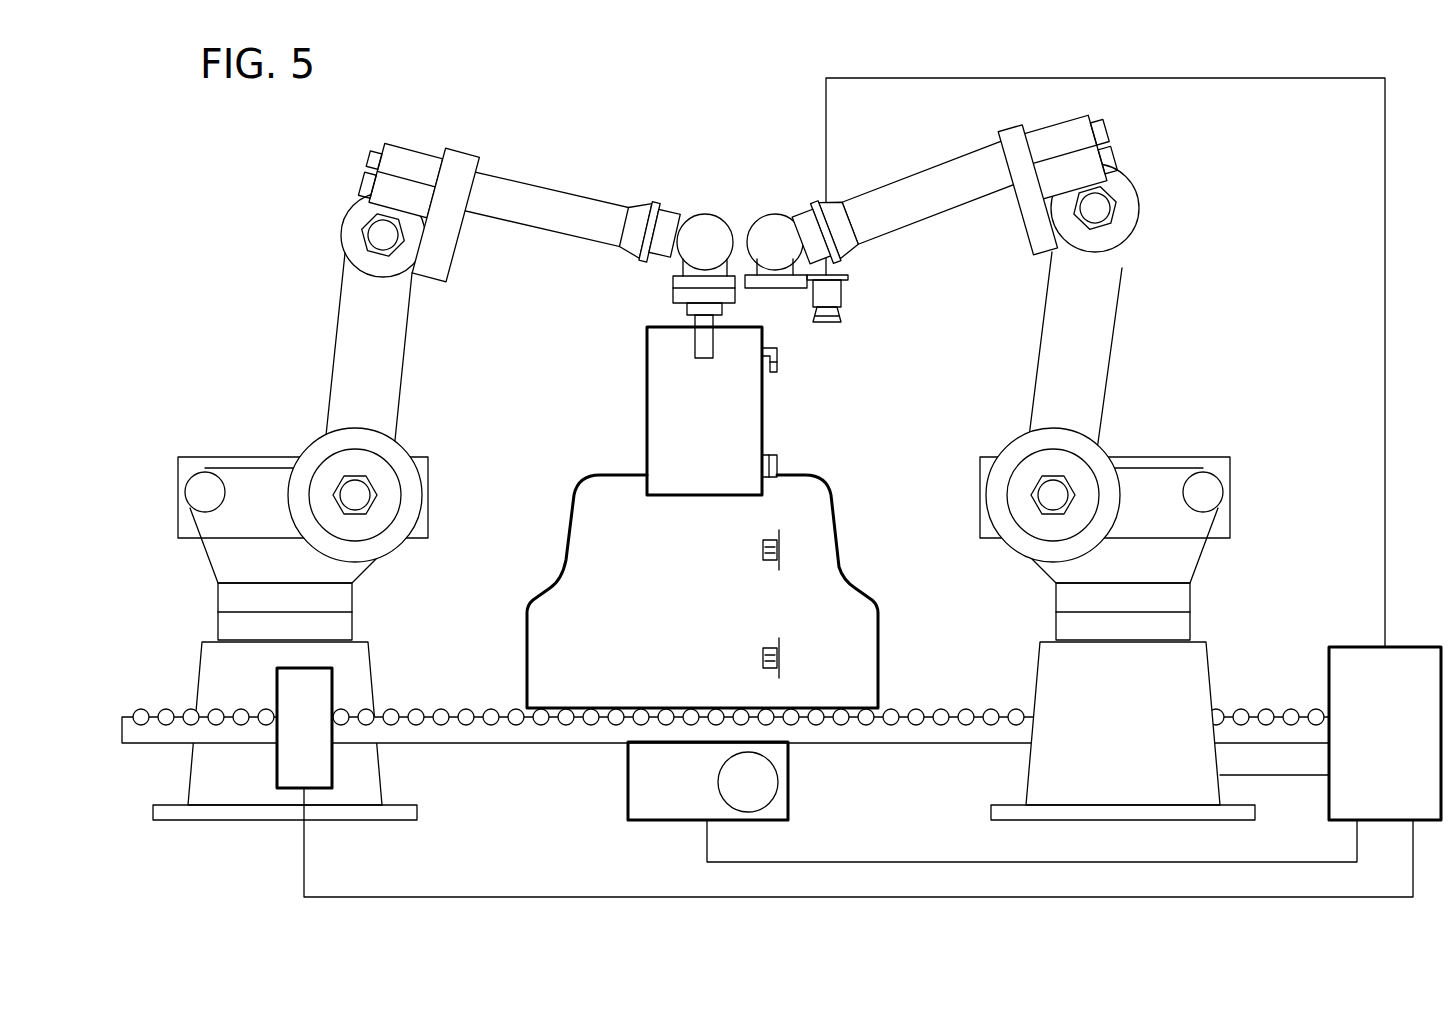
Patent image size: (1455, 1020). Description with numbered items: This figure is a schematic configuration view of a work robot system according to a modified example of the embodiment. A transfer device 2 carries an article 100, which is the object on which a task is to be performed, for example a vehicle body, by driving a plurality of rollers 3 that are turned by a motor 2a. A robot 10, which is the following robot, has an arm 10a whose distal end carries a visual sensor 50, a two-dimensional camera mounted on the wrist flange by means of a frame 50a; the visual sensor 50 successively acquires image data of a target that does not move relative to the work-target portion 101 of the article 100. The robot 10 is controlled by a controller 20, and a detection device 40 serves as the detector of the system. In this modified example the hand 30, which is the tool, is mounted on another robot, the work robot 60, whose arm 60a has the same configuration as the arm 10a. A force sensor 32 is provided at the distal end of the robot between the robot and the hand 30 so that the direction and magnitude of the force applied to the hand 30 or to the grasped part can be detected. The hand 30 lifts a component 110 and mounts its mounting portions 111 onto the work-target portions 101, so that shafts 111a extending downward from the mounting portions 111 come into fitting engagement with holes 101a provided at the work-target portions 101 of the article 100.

The transfer device 2 is at (128, 743).
The motor 2a is at (628, 775).
The rollers 3 is at (140, 708).
The robot 10 is at (1187, 270).
The arm 10a is at (1113, 342).
The controller 20 is at (1329, 660).
The hand 30 is at (687, 310).
The force sensor 32 is at (673, 290).
The detection device 40 is at (332, 680).
The visual sensor 50 is at (813, 294).
The frame 50a is at (848, 278).
The work robot 60 is at (293, 266).
The arm 60a is at (334, 362).
The article 100 is at (553, 588).
The work-target portion 101 is at (780, 550).
The holes 101a is at (763, 548).
The component 110 is at (647, 408).
The mounting portions 111 is at (772, 350).
The shafts 111a is at (778, 366).